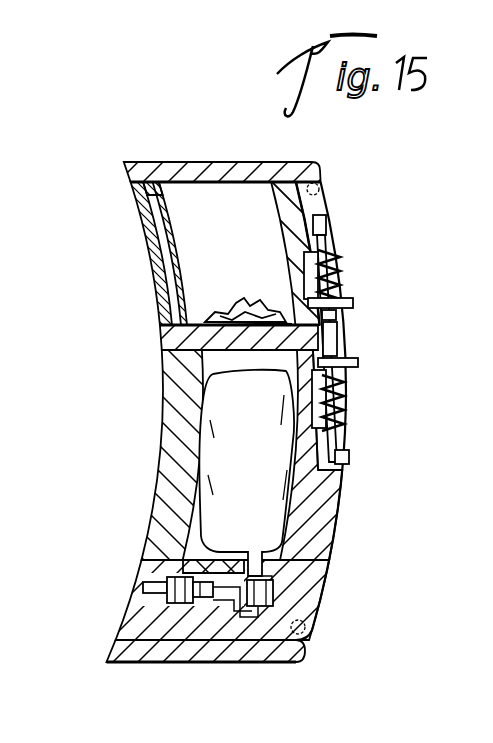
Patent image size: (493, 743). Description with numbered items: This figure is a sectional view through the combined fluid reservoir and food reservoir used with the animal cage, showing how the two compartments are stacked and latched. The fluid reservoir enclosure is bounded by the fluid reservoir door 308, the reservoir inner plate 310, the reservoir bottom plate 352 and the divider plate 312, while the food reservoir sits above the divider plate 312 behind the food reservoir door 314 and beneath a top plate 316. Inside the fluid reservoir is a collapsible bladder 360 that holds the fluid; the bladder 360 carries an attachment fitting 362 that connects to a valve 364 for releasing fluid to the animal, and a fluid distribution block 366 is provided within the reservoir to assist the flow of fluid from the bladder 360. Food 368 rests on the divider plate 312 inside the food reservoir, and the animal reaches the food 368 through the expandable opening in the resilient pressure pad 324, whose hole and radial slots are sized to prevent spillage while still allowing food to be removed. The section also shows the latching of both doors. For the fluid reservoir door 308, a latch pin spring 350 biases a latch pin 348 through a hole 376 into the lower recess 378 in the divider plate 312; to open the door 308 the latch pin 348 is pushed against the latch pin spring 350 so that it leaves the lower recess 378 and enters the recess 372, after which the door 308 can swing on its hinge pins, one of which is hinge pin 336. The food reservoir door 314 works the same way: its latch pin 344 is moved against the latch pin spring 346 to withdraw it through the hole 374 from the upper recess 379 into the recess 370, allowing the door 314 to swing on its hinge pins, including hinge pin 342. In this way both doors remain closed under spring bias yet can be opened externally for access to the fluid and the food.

The fluid reservoir door 308 is at (335, 507).
The reservoir inner plate 310 is at (163, 412).
The divider plate 312 is at (162, 337).
The food reservoir door 314 is at (327, 207).
The top plate 316 is at (202, 163).
The pressure pad 324 is at (148, 202).
The hinge pin 336 is at (317, 628).
The hinge pin 342 is at (327, 192).
The latch pin 344 is at (335, 257).
The latch pin spring 346 is at (337, 277).
The latch pin 348 is at (343, 398).
The latch pin spring 350 is at (343, 392).
The reservoir bottom plate 352 is at (113, 651).
The bladder 360 is at (242, 465).
The attachment fitting 362 is at (262, 593).
The valve 364 is at (150, 582).
The fluid distribution block 366 is at (205, 617).
The food 368 is at (240, 297).
The recess 370 is at (322, 228).
The recess 372 is at (342, 450).
The hole 374 is at (343, 310).
The hole 376 is at (357, 365).
The lower recess 378 is at (347, 336).
The upper recess 379 is at (343, 325).